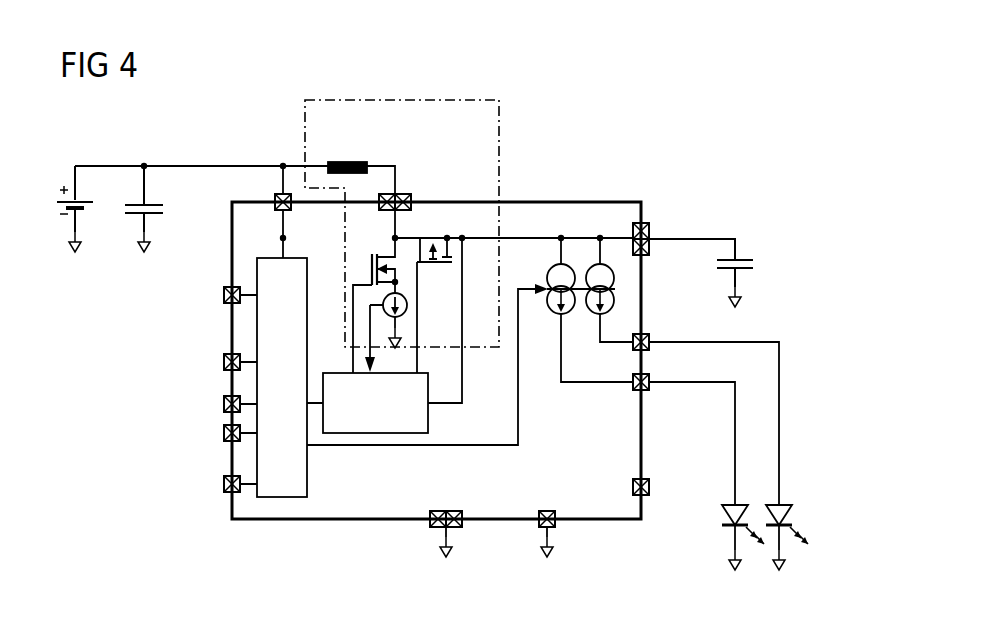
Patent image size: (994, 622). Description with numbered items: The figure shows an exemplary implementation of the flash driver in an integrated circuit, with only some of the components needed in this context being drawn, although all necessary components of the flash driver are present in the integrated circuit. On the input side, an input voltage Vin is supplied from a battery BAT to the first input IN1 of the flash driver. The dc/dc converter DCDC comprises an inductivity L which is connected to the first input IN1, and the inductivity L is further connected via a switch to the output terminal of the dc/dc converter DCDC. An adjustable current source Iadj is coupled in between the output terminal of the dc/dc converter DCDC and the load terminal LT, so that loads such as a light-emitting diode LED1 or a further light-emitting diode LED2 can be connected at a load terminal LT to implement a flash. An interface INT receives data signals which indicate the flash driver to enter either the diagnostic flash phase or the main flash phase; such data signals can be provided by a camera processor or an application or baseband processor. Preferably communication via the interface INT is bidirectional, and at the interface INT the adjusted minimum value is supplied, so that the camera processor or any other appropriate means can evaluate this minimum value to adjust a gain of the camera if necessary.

The input voltage Vin is at (201, 195).
The battery BAT is at (93, 203).
The first input IN1 is at (267, 212).
The inductivity L is at (350, 160).
The dc/dc converter DCDC is at (419, 219).
The interface INT is at (178, 428).
The adjustable current source Iadj is at (568, 315).
The load terminal LT is at (645, 333).
The light-emitting diode LED1 is at (781, 504).
The light-emitting diode LED2 is at (733, 504).